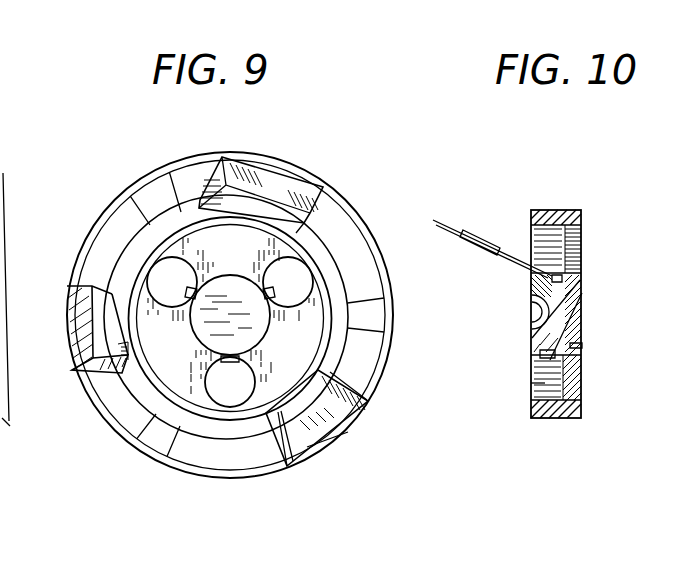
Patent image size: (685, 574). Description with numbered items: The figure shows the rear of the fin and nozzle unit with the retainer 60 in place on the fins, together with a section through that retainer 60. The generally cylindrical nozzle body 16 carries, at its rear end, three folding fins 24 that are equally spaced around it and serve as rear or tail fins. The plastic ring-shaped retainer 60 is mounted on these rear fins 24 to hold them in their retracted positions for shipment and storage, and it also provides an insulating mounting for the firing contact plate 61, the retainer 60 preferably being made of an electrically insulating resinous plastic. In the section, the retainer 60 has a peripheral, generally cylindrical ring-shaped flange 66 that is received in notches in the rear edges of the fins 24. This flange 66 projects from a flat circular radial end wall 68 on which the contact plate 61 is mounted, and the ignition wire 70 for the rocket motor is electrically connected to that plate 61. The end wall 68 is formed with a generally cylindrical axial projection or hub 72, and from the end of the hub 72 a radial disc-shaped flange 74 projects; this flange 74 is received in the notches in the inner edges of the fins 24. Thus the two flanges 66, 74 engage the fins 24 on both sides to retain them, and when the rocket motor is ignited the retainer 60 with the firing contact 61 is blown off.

In FIG. 9, the nozzle body 16 is at (213, 480).
In FIG. 9, the folding fins 24 is at (275, 187).
In FIG. 9, the retainer 60 is at (343, 318).
In FIG. 10, the retainer 60 is at (583, 210).
In FIG. 9, the firing contact plate 61 is at (216, 293).
In FIG. 10, the firing contact plate 61 is at (582, 300).
In FIG. 10, the flange 66 is at (532, 221).
In FIG. 10, the end wall 68 is at (583, 345).
In FIG. 10, the ignition wire 70 is at (447, 222).
In FIG. 10, the hub 72 is at (543, 378).
In FIG. 10, the flange 74 is at (540, 351).